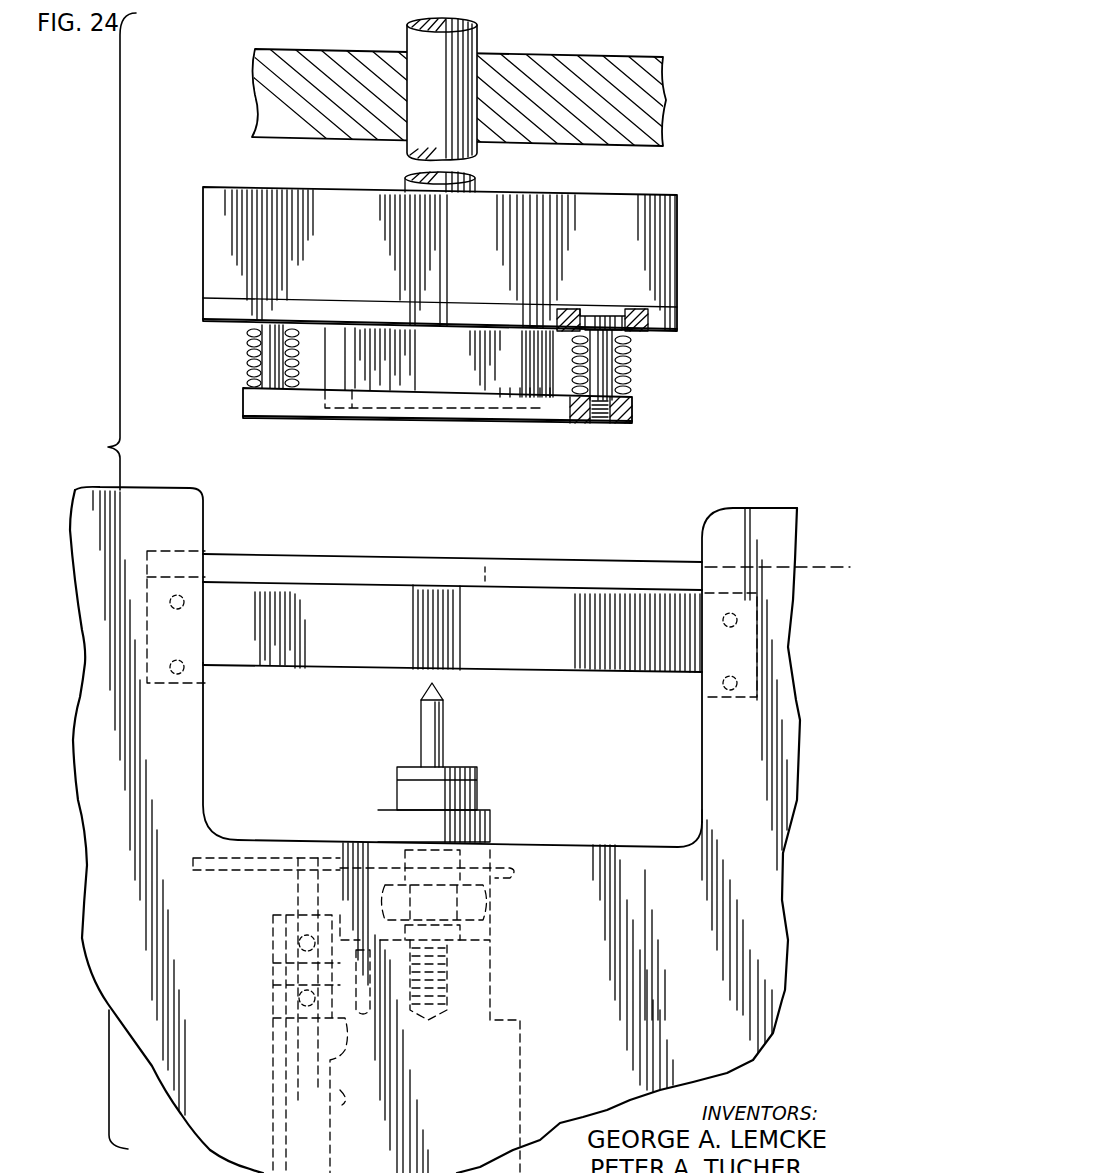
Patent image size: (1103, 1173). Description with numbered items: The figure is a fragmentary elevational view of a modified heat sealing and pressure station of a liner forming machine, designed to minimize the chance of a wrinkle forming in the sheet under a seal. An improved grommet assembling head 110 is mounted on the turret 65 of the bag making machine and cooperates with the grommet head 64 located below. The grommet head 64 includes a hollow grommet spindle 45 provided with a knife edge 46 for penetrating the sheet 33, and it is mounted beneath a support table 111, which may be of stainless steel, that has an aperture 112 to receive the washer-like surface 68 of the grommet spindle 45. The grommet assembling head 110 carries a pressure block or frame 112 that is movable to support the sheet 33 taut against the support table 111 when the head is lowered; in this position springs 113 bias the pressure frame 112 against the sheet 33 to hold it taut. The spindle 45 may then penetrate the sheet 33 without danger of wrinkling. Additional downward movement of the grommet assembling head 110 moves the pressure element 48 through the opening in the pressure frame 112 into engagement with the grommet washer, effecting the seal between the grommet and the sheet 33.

The turret 65 is at (609, 66).
The grommet assembling head 110 is at (193, 250).
The springs 113 is at (246, 352).
The pressure element 48 is at (460, 366).
The pressure frame 112 is at (628, 412).
The sheet 33 is at (823, 567).
The support table 111 is at (647, 575).
The knife edge 46 is at (432, 685).
The grommet spindle 45 is at (432, 725).
The washer-like surface 68 is at (478, 773).
The grommet head 64 is at (510, 940).